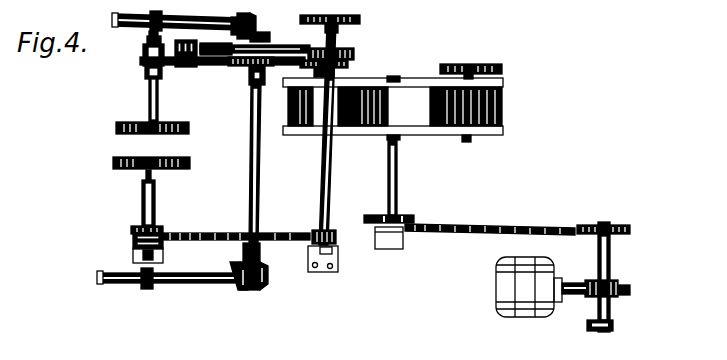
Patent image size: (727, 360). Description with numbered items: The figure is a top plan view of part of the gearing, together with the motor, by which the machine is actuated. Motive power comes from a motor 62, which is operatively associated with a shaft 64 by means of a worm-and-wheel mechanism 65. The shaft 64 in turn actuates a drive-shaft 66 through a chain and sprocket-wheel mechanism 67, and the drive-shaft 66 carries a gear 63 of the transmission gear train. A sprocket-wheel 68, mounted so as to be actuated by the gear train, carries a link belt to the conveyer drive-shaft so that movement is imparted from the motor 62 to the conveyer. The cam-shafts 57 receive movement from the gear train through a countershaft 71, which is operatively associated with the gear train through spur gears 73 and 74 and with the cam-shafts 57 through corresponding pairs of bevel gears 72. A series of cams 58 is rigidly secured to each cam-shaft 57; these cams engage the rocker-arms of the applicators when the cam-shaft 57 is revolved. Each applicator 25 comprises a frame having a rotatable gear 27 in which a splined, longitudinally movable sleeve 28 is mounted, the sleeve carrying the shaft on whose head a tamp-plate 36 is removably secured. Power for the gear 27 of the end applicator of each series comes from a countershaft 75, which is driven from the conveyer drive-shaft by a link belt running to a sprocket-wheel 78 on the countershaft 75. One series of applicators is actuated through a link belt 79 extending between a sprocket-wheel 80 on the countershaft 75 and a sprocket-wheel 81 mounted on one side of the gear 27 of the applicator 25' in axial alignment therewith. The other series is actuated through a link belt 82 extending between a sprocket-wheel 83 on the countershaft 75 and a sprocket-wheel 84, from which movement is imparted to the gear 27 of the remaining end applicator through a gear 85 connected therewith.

The applicator 25 is at (112, 60).
The applicator 25' is at (170, 256).
The gear 27 is at (142, 64).
The sleeve 28 is at (147, 92).
The tamp-plate 36 is at (115, 129).
The cam-shaft 57 is at (151, 30).
The cam 58 is at (148, 290).
The motor 62 is at (495, 292).
The gear 63 is at (382, 124).
The shaft 64 is at (598, 254).
The worm-and-wheel mechanism 65 is at (613, 282).
The drive-shaft 66 is at (398, 182).
The chain and sprocket-wheel mechanism 67 is at (560, 225).
The sprocket-wheel 68 is at (503, 70).
The countershaft 71 is at (250, 126).
The bevel gear 72 is at (254, 30).
The spur gear 73 is at (236, 66).
The spur gear 74 is at (349, 64).
The countershaft 75 is at (322, 201).
The sprocket-wheel 78 is at (361, 20).
The link belt 79 is at (212, 231).
The sprocket-wheel 80 is at (338, 240).
The sprocket-wheel 81 is at (130, 228).
The link belt 82 is at (286, 50).
The sprocket-wheel 83 is at (339, 43).
The sprocket-wheel 84 is at (201, 66).
The gear 85 is at (181, 68).